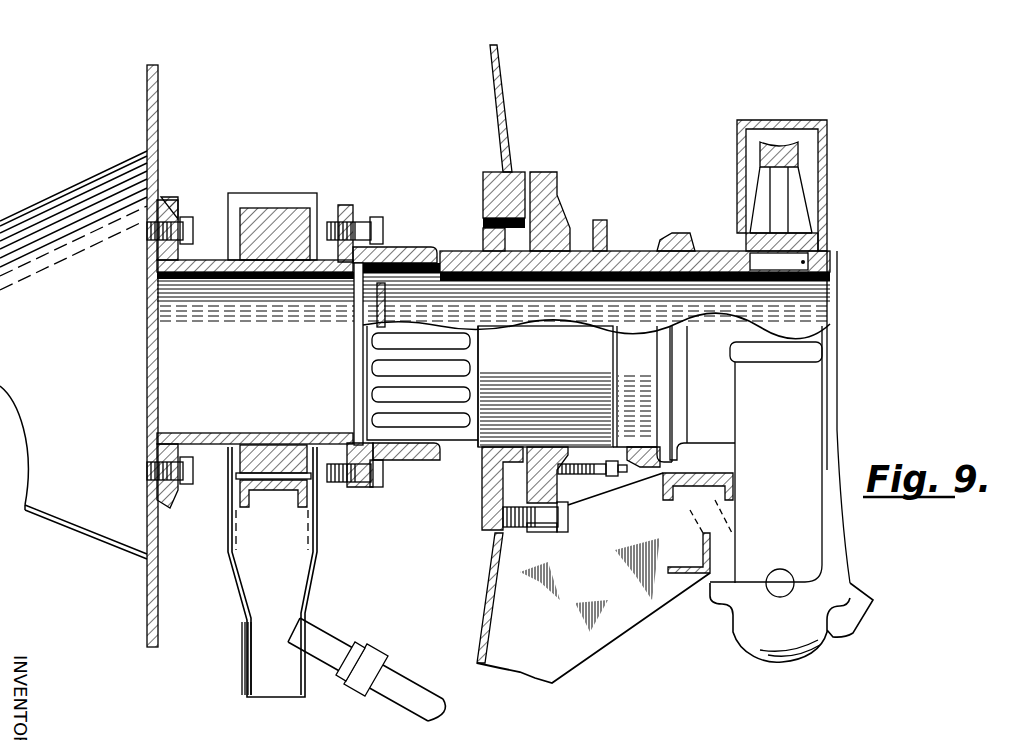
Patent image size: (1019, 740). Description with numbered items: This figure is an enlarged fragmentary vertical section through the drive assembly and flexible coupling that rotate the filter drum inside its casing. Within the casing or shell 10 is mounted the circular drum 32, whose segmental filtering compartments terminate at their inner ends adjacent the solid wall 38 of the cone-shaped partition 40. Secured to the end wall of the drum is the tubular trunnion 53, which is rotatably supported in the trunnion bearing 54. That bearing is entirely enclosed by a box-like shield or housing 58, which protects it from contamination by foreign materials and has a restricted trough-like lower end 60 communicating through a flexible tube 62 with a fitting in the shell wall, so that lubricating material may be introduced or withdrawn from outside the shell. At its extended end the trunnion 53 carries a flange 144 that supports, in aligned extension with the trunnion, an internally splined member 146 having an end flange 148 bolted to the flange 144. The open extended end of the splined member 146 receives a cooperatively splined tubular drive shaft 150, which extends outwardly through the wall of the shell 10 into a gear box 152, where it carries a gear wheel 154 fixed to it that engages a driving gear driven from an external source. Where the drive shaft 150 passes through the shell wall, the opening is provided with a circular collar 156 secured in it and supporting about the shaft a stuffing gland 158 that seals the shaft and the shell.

The casing or shell 10 is at (505, 132).
The circular drum 32 is at (158, 142).
The solid wall 38 is at (69, 186).
The cone-shaped partition 40 is at (77, 508).
The tubular trunnion 53 is at (250, 275).
The trunnion bearing 54 is at (290, 210).
The box-like shield or housing 58 is at (245, 193).
The trough-like lower end 60 is at (248, 645).
The flexible tube 62 is at (350, 640).
The flange 144 is at (348, 210).
The internally splined member 146 is at (400, 249).
The end flange 148 is at (378, 216).
The tubular drive shaft 150 is at (470, 330).
The gear box 152 is at (737, 193).
The gear wheel 154 is at (798, 207).
The circular collar 156 is at (516, 178).
The stuffing gland 158 is at (574, 211).